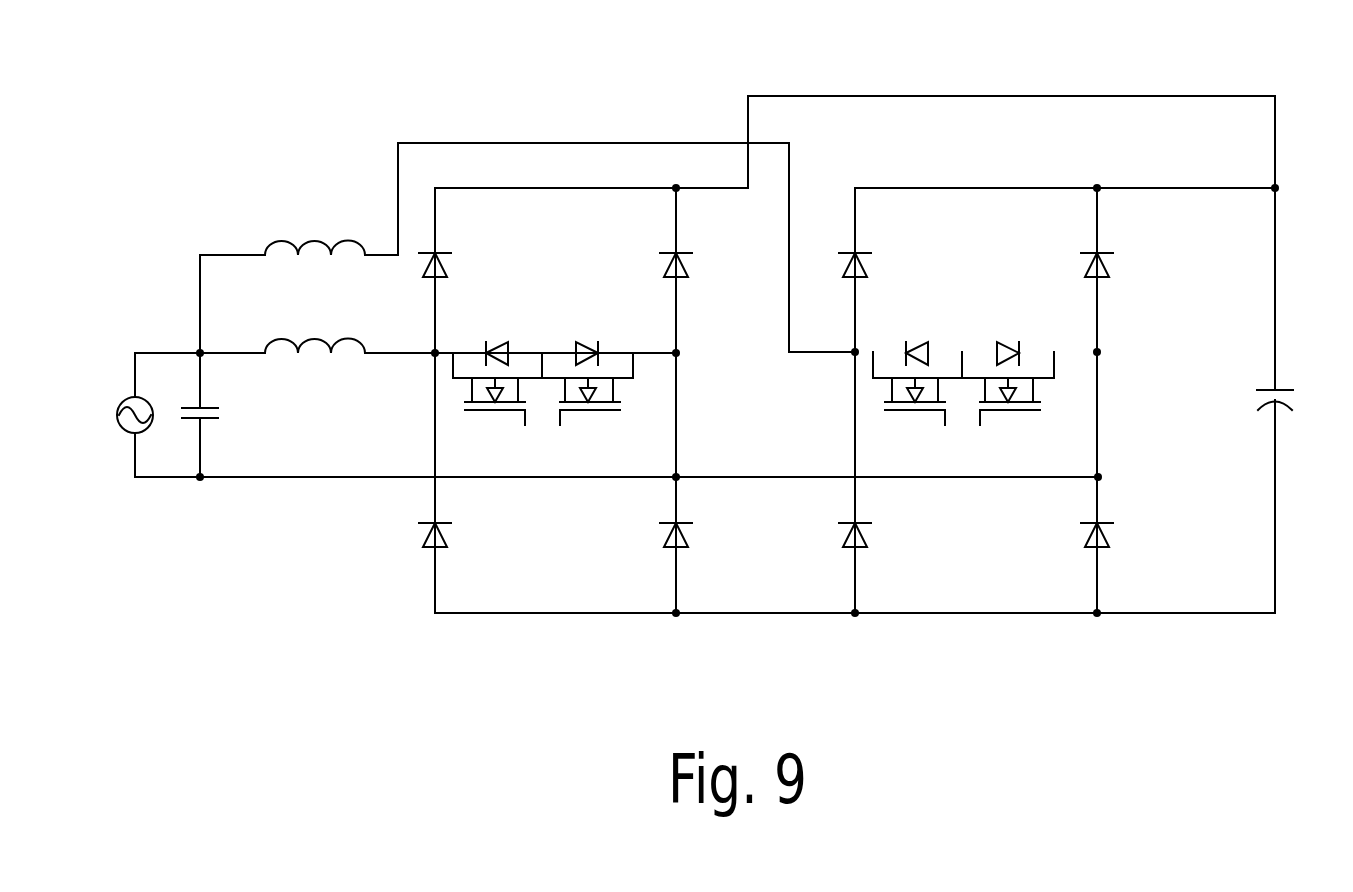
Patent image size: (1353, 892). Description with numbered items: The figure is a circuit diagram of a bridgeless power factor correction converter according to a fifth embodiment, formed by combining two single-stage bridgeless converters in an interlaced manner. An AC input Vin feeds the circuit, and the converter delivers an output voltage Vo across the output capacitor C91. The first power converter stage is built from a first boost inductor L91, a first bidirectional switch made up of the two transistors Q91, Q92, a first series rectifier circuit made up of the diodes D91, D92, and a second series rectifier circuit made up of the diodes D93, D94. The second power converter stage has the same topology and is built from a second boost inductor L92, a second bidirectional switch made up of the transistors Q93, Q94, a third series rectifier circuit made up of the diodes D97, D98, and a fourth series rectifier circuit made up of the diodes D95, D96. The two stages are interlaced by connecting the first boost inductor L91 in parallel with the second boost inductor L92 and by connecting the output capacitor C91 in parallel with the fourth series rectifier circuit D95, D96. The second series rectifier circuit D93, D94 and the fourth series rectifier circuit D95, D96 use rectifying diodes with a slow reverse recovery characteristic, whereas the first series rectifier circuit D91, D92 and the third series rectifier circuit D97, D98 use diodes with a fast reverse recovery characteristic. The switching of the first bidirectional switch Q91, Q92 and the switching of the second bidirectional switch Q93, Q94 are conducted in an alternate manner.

The AC input voltage source Vin is at (108, 417).
The first boost inductor L91 is at (315, 327).
The second boost inductor L92 is at (315, 229).
The first series rectifier circuit diode D91 is at (466, 268).
The first series rectifier circuit diode D92 is at (468, 539).
The second series rectifier circuit diode D93 is at (708, 268).
The second series rectifier circuit diode D94 is at (710, 539).
The fourth series rectifier circuit diode D95 is at (1131, 268).
The fourth series rectifier circuit diode D96 is at (1131, 539).
The third series rectifier circuit diode D97 is at (888, 268).
The third series rectifier circuit diode D98 is at (888, 539).
The first bidirectional switch transistor Q91 is at (497, 402).
The first bidirectional switch transistor Q92 is at (587, 402).
The second bidirectional switch transistor Q93 is at (917, 402).
The second bidirectional switch transistor Q94 is at (1008, 402).
The output capacitor C91 is at (1245, 401).
The output voltage Vo is at (1315, 398).